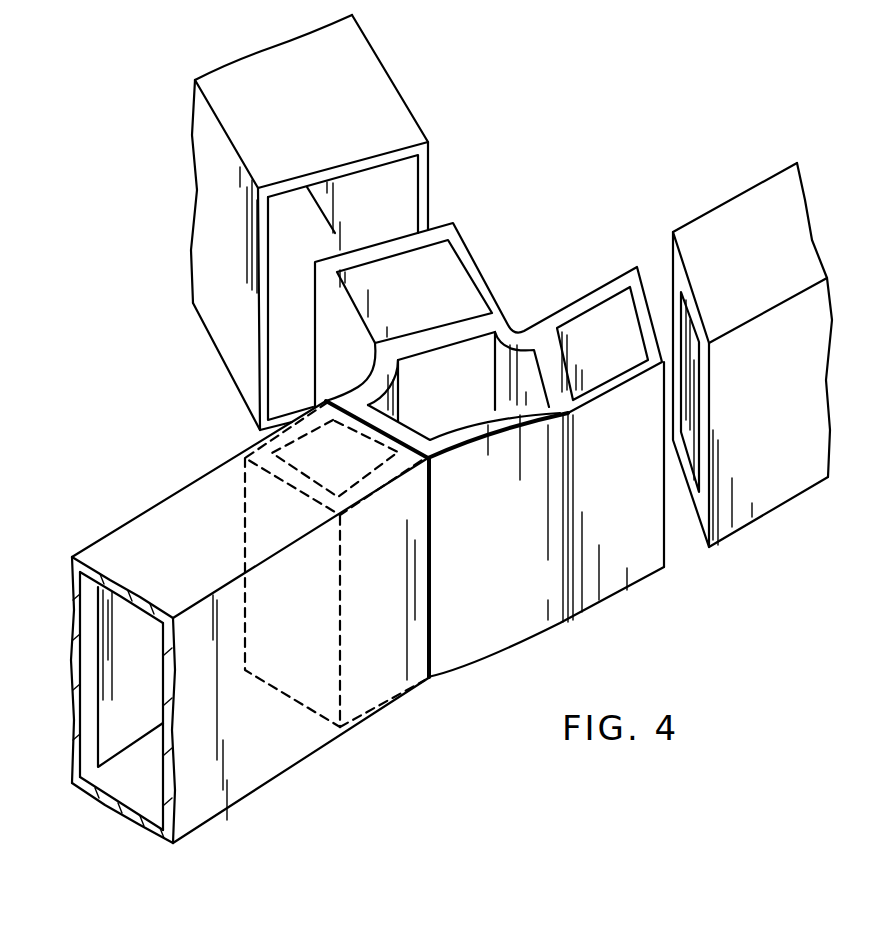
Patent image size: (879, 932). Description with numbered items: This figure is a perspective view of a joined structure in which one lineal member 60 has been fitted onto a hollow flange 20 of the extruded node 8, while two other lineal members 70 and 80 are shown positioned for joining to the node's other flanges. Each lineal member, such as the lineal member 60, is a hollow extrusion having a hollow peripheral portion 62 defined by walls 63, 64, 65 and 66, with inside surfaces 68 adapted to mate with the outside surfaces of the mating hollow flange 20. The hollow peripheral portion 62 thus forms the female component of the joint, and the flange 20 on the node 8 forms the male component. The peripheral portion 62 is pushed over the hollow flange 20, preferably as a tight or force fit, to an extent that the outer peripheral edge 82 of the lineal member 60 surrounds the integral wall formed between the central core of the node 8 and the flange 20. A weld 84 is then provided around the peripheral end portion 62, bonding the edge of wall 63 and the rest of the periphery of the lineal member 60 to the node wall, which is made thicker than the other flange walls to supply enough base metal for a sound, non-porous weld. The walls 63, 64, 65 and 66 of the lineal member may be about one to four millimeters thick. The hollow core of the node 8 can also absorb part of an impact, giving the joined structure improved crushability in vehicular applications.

The node 8 is at (503, 290).
The hollow flange 20 is at (263, 478).
The lineal member 60 is at (318, 758).
The hollow peripheral portion 62 is at (112, 783).
The wall 63 is at (190, 830).
The wall 64 is at (91, 562).
The wall 65 is at (73, 655).
The wall 66 is at (150, 825).
The inside surfaces 68 is at (90, 717).
The lineal member 70 is at (398, 80).
The lineal member 80 is at (733, 190).
The outer peripheral edge 82 is at (430, 543).
The weld 84 is at (392, 438).